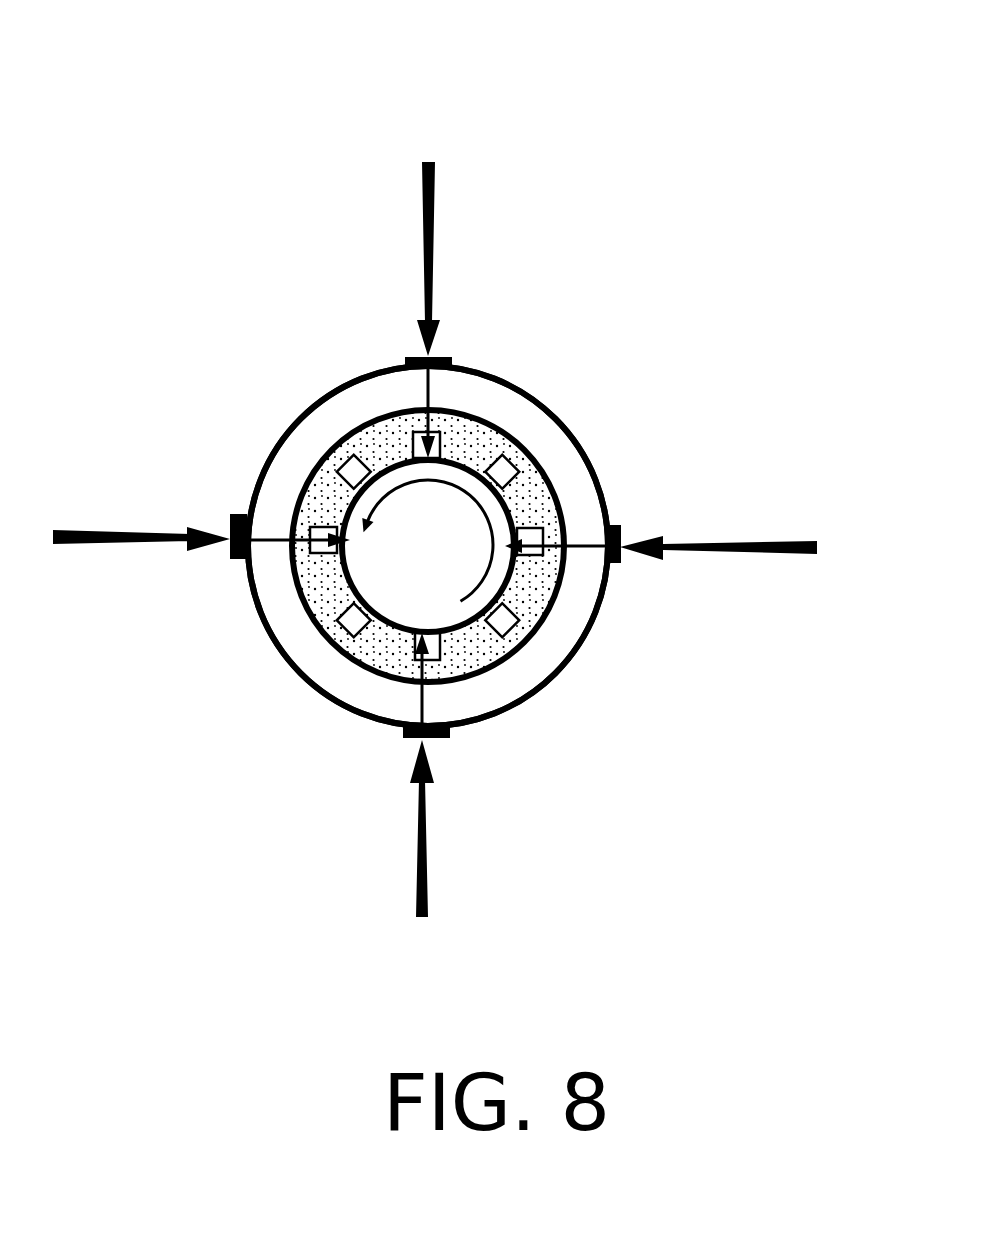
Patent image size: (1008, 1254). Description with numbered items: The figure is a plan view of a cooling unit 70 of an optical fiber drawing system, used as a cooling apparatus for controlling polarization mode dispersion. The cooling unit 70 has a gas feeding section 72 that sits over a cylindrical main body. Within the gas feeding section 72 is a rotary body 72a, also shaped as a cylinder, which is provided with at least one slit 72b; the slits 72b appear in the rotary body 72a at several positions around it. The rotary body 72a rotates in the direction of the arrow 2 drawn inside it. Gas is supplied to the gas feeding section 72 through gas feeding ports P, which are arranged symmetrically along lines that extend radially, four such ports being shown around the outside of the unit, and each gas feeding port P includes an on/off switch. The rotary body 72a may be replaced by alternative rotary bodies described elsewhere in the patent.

The cooling unit 70 is at (553, 367).
The gas feeding section 72 is at (583, 450).
The rotary body 72a is at (528, 612).
The slits 72b is at (547, 513).
The arrow 2 is at (393, 487).
The gas feeding ports P is at (235, 560).